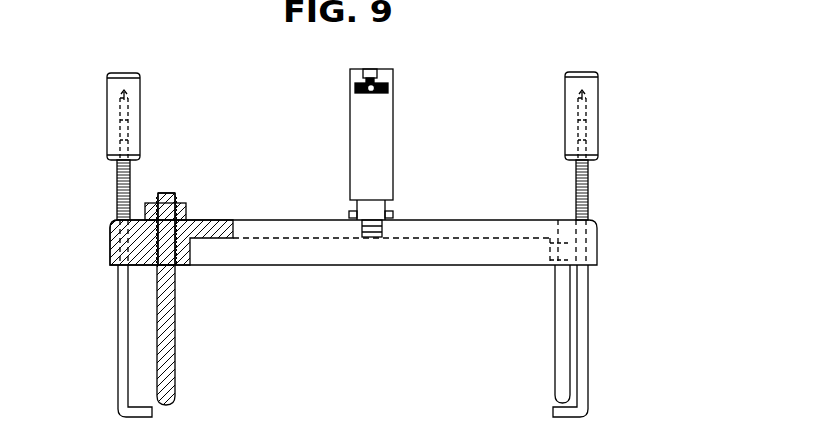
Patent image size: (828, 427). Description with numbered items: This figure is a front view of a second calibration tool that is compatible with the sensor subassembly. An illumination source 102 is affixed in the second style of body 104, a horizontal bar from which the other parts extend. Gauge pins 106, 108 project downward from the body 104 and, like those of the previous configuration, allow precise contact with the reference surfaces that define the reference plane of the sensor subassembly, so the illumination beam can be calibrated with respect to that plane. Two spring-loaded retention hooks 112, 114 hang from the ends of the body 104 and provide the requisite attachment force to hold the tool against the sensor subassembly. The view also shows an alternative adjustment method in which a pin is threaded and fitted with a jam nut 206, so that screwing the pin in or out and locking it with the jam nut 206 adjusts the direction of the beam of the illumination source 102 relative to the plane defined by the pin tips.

The illumination source 102 is at (400, 64).
The body 104 is at (271, 221).
The gauge pin 106 is at (176, 338).
The gauge pin 108 is at (555, 338).
The spring-loaded retention hook 112 is at (118, 338).
The spring-loaded retention hook 114 is at (589, 328).
The jam nut 206 is at (187, 204).